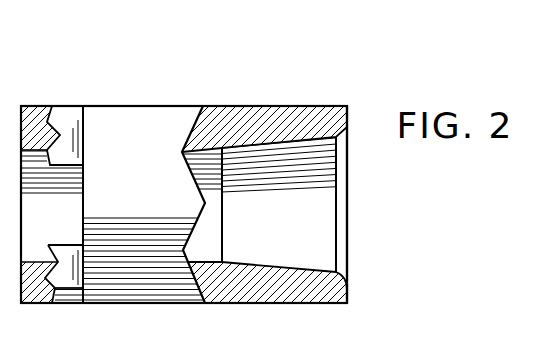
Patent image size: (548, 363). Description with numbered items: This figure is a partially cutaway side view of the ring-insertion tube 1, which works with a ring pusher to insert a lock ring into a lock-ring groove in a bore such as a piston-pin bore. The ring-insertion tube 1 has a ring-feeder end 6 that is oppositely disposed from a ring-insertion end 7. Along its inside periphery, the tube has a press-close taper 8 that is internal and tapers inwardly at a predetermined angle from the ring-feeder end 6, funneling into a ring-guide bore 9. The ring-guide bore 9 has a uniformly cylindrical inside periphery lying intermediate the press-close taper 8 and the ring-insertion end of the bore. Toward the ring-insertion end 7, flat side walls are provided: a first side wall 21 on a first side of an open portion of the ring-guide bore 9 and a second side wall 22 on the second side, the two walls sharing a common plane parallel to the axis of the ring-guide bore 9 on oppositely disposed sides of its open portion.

The ring-insertion tube 1 is at (386, 77).
The ring-feeder end 6 is at (343, 305).
The ring-insertion end 7 is at (36, 303).
The press-close taper 8 is at (266, 215).
The ring-guide bore 9 is at (42, 221).
The first side wall 21 is at (72, 148).
The second side wall 22 is at (70, 282).